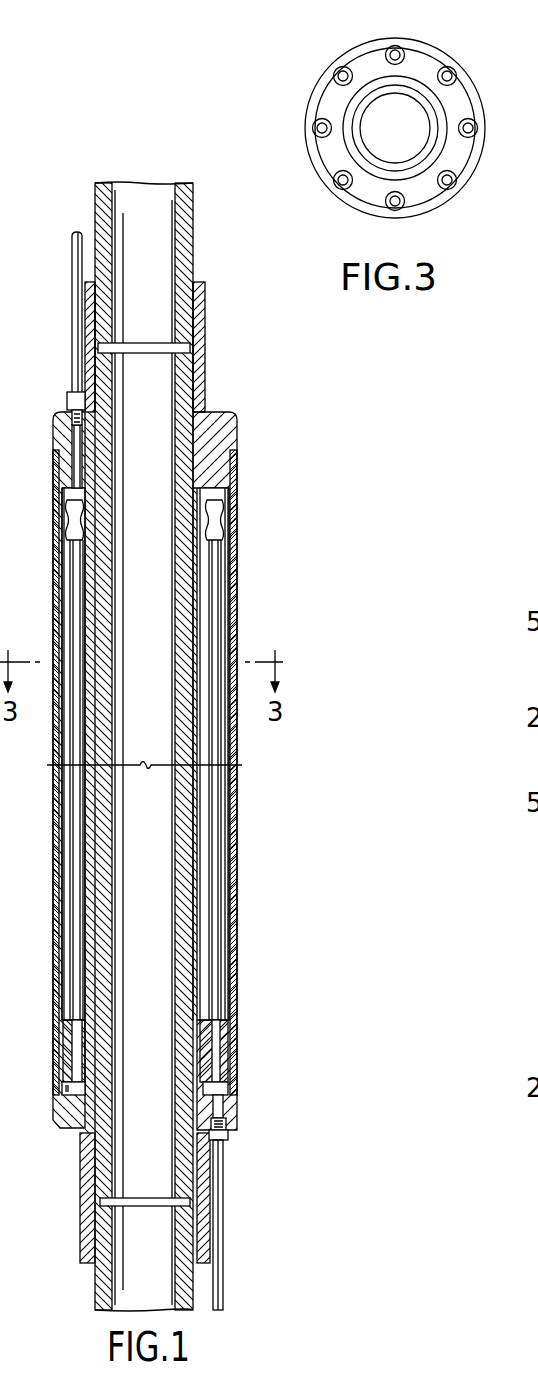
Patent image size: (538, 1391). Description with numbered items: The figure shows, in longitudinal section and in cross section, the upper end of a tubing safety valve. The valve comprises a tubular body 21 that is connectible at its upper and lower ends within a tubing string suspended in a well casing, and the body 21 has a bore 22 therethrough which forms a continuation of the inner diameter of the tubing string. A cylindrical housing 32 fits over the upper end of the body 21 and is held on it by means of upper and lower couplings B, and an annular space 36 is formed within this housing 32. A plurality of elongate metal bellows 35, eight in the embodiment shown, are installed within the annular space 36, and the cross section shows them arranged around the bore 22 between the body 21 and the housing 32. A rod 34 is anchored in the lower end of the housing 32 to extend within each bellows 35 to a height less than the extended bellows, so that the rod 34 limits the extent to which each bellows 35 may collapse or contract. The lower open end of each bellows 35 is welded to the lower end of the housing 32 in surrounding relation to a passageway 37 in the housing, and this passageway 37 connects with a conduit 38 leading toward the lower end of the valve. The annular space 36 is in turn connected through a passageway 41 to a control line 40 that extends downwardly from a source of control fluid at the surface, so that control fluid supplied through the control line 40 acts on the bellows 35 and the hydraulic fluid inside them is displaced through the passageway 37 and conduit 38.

In FIG. 1, the tubular body 21 is at (233, 453).
In FIG. 3, the tubular body 21 is at (433, 143).
In FIG. 1, the bore 22 is at (175, 810).
In FIG. 3, the bore 22 is at (362, 103).
In FIG. 1, the cylindrical housing 32 is at (238, 575).
In FIG. 3, the cylindrical housing 32 is at (474, 82).
In FIG. 1, the rod 34 is at (75, 815).
In FIG. 3, the rod 34 is at (345, 72).
In FIG. 1, the elongate metal bellows 35 is at (206, 783).
In FIG. 3, the elongate metal bellows 35 is at (343, 184).
In FIG. 1, the annular space 36 is at (208, 493).
In FIG. 3, the annular space 36 is at (430, 195).
In FIG. 1, the passageway 37 is at (215, 1061).
In FIG. 1, the conduit 38 is at (228, 1240).
In FIG. 1, the control line 40 is at (72, 246).
In FIG. 1, the passageway 41 is at (80, 435).
In FIG. 1, the couplings B is at (206, 348).